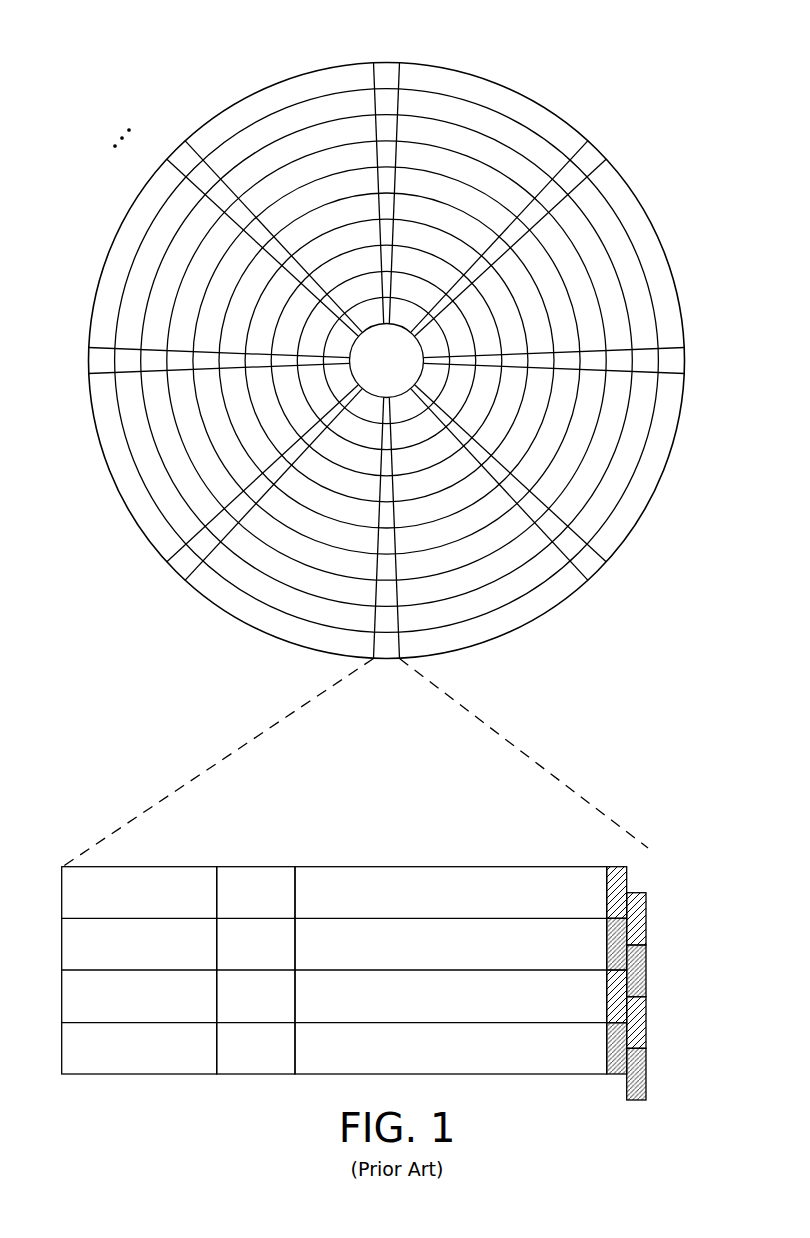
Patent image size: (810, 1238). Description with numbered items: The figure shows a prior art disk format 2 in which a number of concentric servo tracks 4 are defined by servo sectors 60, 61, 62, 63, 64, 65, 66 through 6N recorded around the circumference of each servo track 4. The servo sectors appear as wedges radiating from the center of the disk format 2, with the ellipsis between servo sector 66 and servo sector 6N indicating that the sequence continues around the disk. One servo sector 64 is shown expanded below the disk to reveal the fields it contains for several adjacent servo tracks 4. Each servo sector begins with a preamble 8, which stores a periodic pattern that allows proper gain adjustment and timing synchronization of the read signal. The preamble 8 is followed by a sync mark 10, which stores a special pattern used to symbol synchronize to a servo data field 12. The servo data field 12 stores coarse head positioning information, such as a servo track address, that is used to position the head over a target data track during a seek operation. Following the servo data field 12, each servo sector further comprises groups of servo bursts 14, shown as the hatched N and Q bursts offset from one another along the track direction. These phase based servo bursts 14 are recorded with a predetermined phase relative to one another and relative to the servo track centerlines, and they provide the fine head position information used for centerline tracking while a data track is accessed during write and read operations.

The disk format 2 is at (168, 67).
The servo track 4 is at (487, 121).
The servo sector 60 is at (388, 73).
The servo sector 61 is at (596, 154).
The servo sector 62 is at (678, 360).
The servo sector 63 is at (590, 565).
The servo sector 64 is at (255, 734).
The servo sector 65 is at (178, 567).
The servo sector 66 is at (95, 360).
The servo sector 6N is at (182, 155).
The preamble 8 is at (146, 867).
The sync mark 10 is at (259, 867).
The servo data field 12 is at (439, 867).
The servo bursts 14 is at (642, 866).